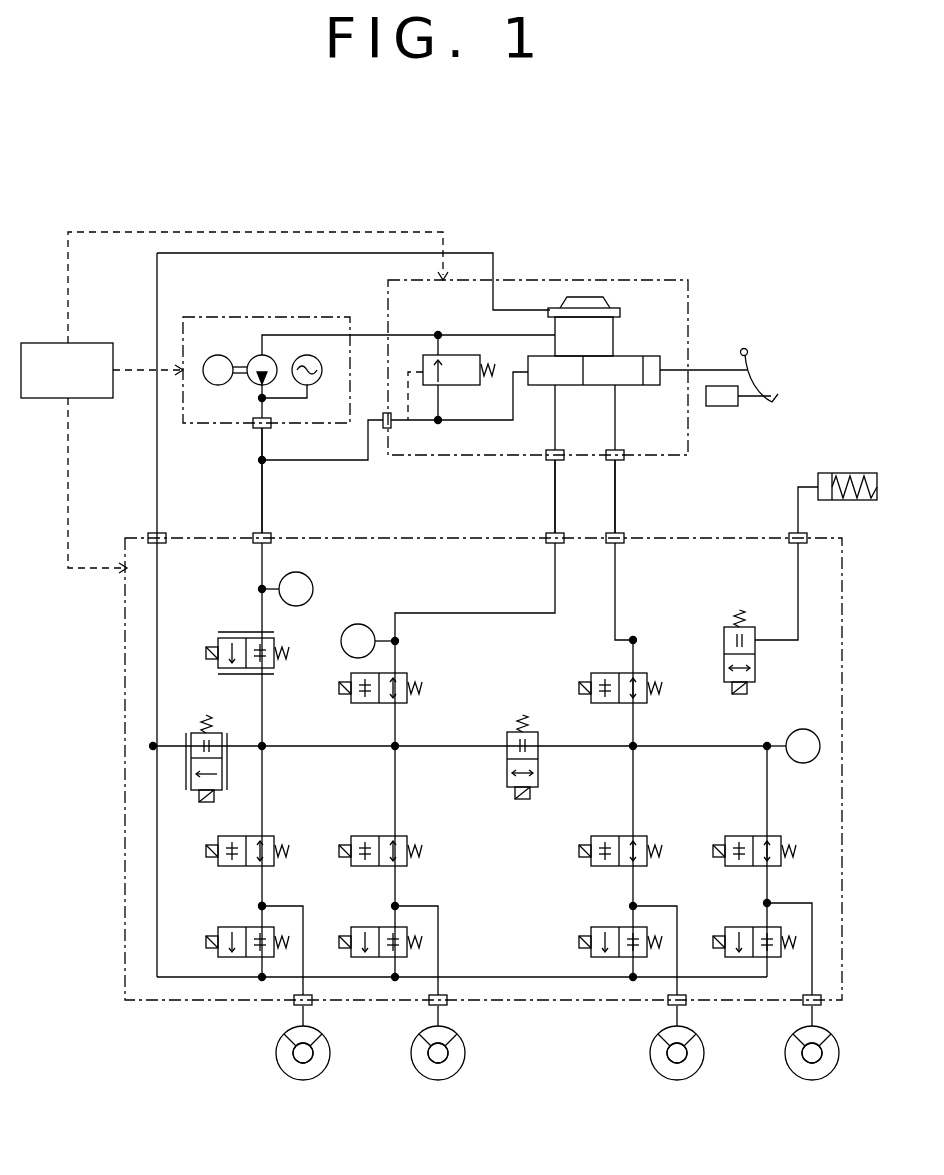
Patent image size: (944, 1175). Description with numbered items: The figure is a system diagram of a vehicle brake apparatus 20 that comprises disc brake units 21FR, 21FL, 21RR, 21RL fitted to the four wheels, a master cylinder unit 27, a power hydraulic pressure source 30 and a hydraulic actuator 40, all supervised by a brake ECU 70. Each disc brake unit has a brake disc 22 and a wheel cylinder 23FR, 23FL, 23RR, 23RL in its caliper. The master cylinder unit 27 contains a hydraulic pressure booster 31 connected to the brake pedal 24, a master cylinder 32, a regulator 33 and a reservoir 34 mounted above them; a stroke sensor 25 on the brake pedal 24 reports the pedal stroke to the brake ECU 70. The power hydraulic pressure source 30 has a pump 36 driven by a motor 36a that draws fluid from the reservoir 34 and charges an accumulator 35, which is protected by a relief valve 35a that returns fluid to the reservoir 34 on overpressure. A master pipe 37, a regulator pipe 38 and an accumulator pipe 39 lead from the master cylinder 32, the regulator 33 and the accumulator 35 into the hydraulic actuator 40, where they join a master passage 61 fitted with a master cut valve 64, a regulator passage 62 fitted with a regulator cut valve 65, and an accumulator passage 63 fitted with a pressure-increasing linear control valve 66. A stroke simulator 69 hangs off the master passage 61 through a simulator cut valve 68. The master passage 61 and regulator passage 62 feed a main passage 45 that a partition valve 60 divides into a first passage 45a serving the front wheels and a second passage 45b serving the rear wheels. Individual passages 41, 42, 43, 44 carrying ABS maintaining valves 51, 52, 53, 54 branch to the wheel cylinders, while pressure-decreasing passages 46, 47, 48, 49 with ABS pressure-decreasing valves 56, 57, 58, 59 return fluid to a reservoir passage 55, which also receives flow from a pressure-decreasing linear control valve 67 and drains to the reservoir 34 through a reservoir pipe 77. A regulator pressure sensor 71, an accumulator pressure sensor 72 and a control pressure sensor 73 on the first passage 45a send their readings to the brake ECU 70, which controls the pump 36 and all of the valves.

The brake apparatus 20 is at (722, 252).
The master cylinder unit 27 is at (650, 280).
The reservoir 34 is at (603, 294).
The hydraulic pressure booster 31 is at (652, 356).
The brake pedal 24 is at (778, 398).
The stroke sensor 25 is at (718, 407).
The brake ECU 70 is at (44, 343).
The power hydraulic pressure source 30 is at (270, 317).
The motor 36a is at (216, 355).
The pump 36 is at (254, 385).
The accumulator 35 is at (311, 387).
The relief valve 35a is at (460, 387).
The regulator 33 is at (538, 386).
The master cylinder 32 is at (588, 386).
The stroke simulator 69 is at (848, 473).
The reservoir pipe 77 is at (158, 483).
The accumulator pipe 39 is at (264, 495).
The regulator pipe 38 is at (554, 499).
The master pipe 37 is at (614, 495).
The hydraulic actuator 40 is at (822, 537).
The accumulator pressure sensor 72 is at (302, 575).
The regulator pressure sensor 71 is at (351, 629).
The regulator passage 62 is at (440, 613).
The master passage 61 is at (613, 626).
The pressure-increasing linear control valve 66 is at (277, 670).
The regulator cut valve 65 is at (412, 675).
The master cut valve 64 is at (650, 679).
The simulator cut valve 68 is at (757, 677).
The pressure-decreasing linear control valve 67 is at (206, 720).
The accumulator passage 63 is at (264, 712).
The main passage 45 is at (680, 744).
The control pressure sensor 73 is at (788, 732).
The second passage 45b is at (285, 748).
The first passage 45a is at (660, 748).
The partition valve 60 is at (540, 785).
The ABS maintaining valve 53 is at (270, 834).
The ABS maintaining valve 54 is at (400, 834).
The ABS maintaining valve 51 is at (642, 834).
The ABS maintaining valve 52 is at (777, 834).
The ABS pressure-decreasing valve 58 is at (215, 928).
The ABS pressure-decreasing valve 59 is at (357, 928).
The ABS pressure-decreasing valve 56 is at (594, 928).
The ABS pressure-decreasing valve 57 is at (727, 928).
The pressure-decreasing passage 48 is at (256, 922).
The pressure-decreasing passage 49 is at (390, 922).
The pressure-decreasing passage 46 is at (628, 922).
The pressure-decreasing passage 47 is at (760, 922).
The individual passage 43 is at (283, 905).
The individual passage 44 is at (418, 905).
The individual passage 41 is at (662, 905).
The individual passage 42 is at (793, 903).
The reservoir passage 55 is at (190, 977).
The wheel cylinder 23RR is at (280, 1038).
The wheel cylinder 23RL is at (430, 1030).
The wheel cylinder 23FR is at (654, 1038).
The wheel cylinder 23FL is at (804, 1030).
The disc brake unit 21RR is at (275, 1068).
The disc brake unit 21RL is at (412, 1068).
The disc brake unit 21FR is at (650, 1068).
The disc brake unit 21FL is at (786, 1068).
The brake disc 22 is at (300, 1077).